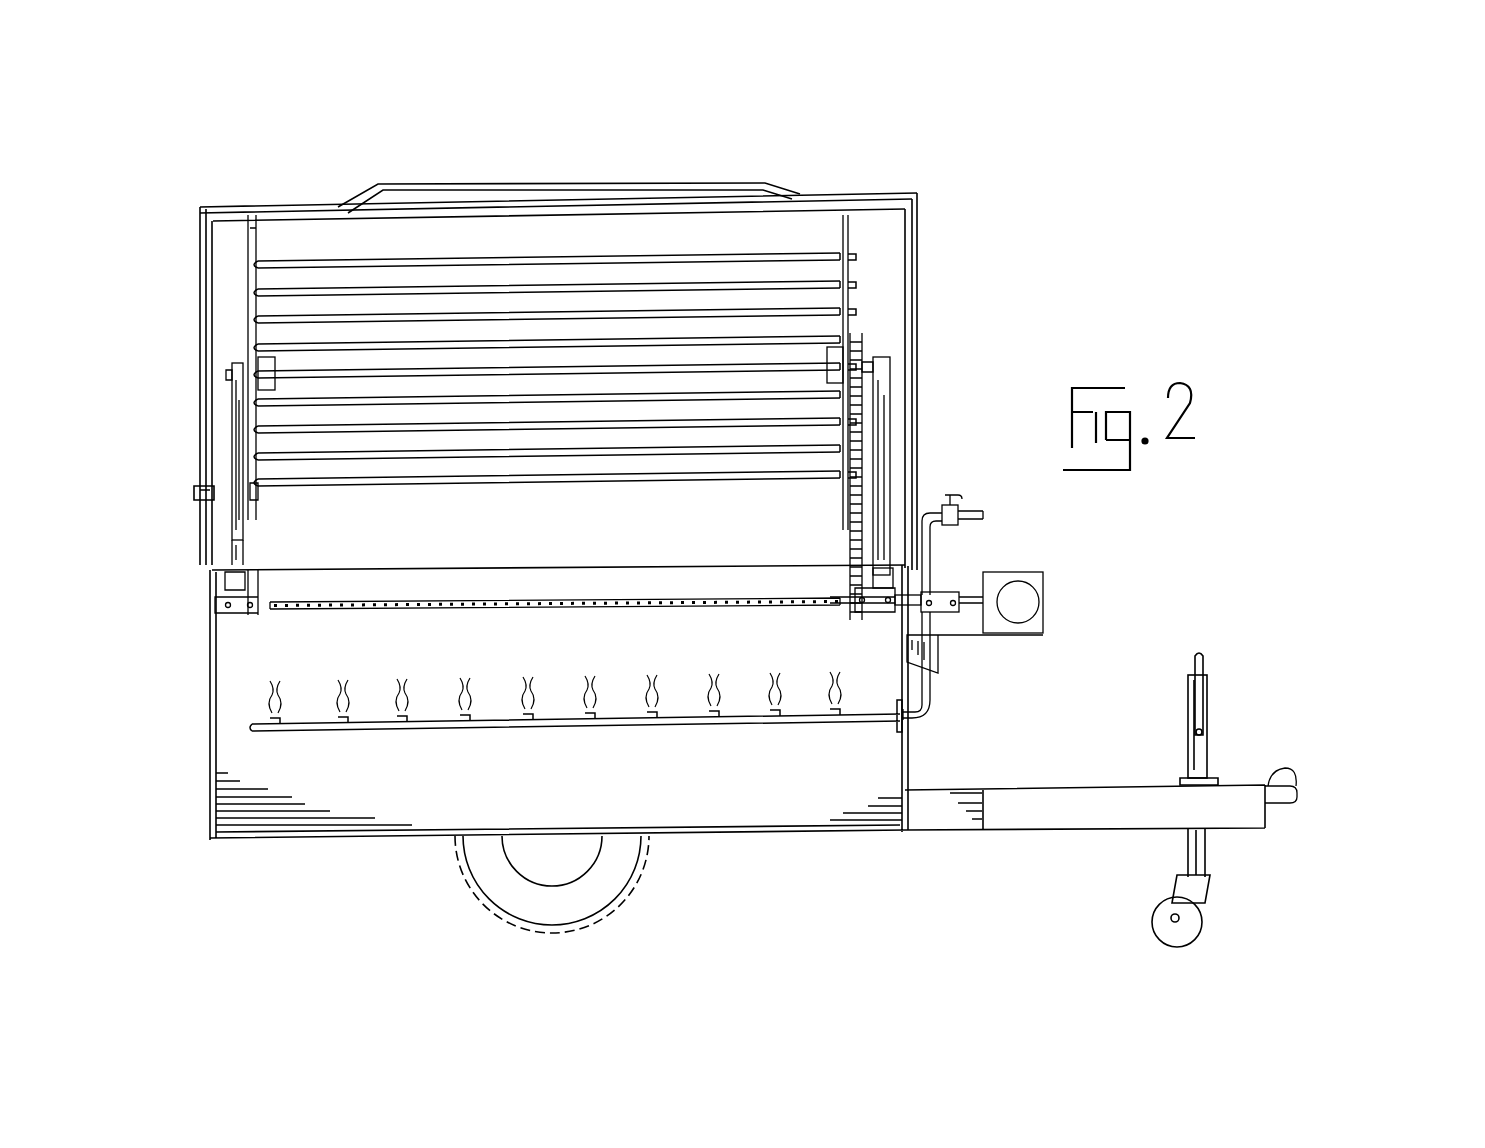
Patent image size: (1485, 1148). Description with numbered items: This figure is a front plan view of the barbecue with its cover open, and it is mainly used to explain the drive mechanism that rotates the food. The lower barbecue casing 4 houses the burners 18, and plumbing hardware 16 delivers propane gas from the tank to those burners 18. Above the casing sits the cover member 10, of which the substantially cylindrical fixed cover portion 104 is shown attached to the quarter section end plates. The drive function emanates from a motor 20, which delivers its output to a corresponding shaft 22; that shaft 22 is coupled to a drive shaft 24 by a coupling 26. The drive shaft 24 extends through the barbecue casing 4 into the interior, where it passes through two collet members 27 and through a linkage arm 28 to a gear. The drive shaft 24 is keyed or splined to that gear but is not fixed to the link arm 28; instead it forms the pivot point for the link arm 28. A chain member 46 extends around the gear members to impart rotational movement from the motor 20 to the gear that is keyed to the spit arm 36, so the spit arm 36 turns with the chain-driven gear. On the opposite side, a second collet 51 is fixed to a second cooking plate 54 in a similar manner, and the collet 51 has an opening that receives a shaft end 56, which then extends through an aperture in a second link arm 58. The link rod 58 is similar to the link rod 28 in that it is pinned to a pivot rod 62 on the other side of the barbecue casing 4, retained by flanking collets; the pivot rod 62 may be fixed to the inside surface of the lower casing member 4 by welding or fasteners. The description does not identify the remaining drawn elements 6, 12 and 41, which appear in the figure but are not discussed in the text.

The barbecue casing 4 is at (208, 736).
The frame 6 is at (1137, 808).
The cover member 10 is at (846, 190).
The hitch 12 is at (1296, 786).
The plumbing hardware 16 is at (932, 556).
The burner 18 is at (500, 724).
The motor 20 is at (1046, 586).
The shaft 22 is at (976, 606).
The drive shaft 24 is at (912, 610).
The coupling 26 is at (946, 614).
The collet members 27 is at (860, 612).
The link arm 28 is at (882, 386).
The spit arm 36 is at (595, 368).
The right rack rail 41 is at (838, 352).
The chain member 46 is at (852, 547).
The second collet 51 is at (268, 362).
The second cooking plate 54 is at (258, 497).
The shaft end 56 is at (245, 360).
The link arm 58 is at (240, 548).
The pivot rod 62 is at (226, 610).
The cylindrical fixed cover portion 104 is at (566, 534).